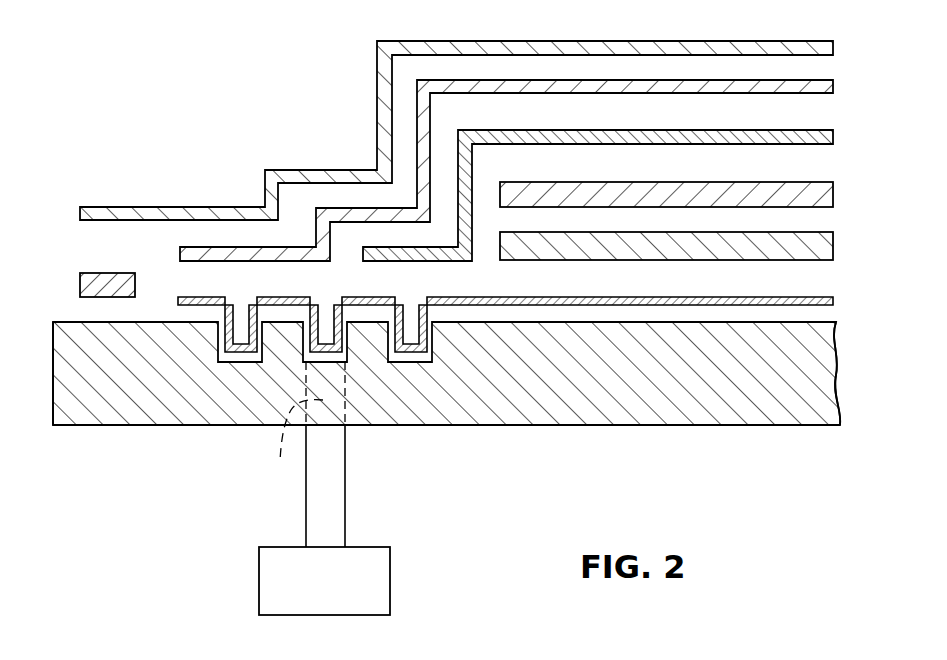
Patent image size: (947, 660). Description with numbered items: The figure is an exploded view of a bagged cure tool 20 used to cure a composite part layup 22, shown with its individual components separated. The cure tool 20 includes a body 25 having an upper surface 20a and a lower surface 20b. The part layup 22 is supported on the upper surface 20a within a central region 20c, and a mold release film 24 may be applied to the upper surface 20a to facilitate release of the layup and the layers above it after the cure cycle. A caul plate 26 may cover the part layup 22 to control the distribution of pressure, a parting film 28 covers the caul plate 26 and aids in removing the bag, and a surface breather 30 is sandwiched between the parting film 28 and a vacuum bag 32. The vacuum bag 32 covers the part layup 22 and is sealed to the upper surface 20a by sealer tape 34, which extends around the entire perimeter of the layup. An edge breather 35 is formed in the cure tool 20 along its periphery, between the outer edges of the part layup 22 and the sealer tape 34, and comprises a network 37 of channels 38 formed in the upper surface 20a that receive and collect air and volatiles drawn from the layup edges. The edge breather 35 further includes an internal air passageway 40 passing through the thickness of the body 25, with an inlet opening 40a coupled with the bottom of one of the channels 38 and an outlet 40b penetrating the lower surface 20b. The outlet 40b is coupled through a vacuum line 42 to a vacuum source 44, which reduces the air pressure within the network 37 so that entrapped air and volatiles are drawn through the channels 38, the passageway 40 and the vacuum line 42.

The cure tool 20 is at (80, 413).
The upper surface 20a is at (70, 320).
The lower surface 20b is at (575, 430).
The central region 20c is at (725, 323).
The composite part layup 22 is at (822, 248).
The mold release film 24 is at (802, 298).
The body 25 is at (90, 373).
The caul plate 26 is at (812, 193).
The parting film 28 is at (810, 140).
The surface breather 30 is at (817, 87).
The vacuum bag 32 is at (788, 48).
The sealer tape 34 is at (108, 284).
The edge breather 35 is at (372, 358).
The network of channels 37 is at (208, 353).
The channels 38 is at (296, 357).
The internal air passageway 40 is at (280, 462).
The inlet opening 40a is at (327, 357).
The outlet 40b is at (326, 432).
The vacuum line 42 is at (323, 518).
The vacuum source 44 is at (259, 580).